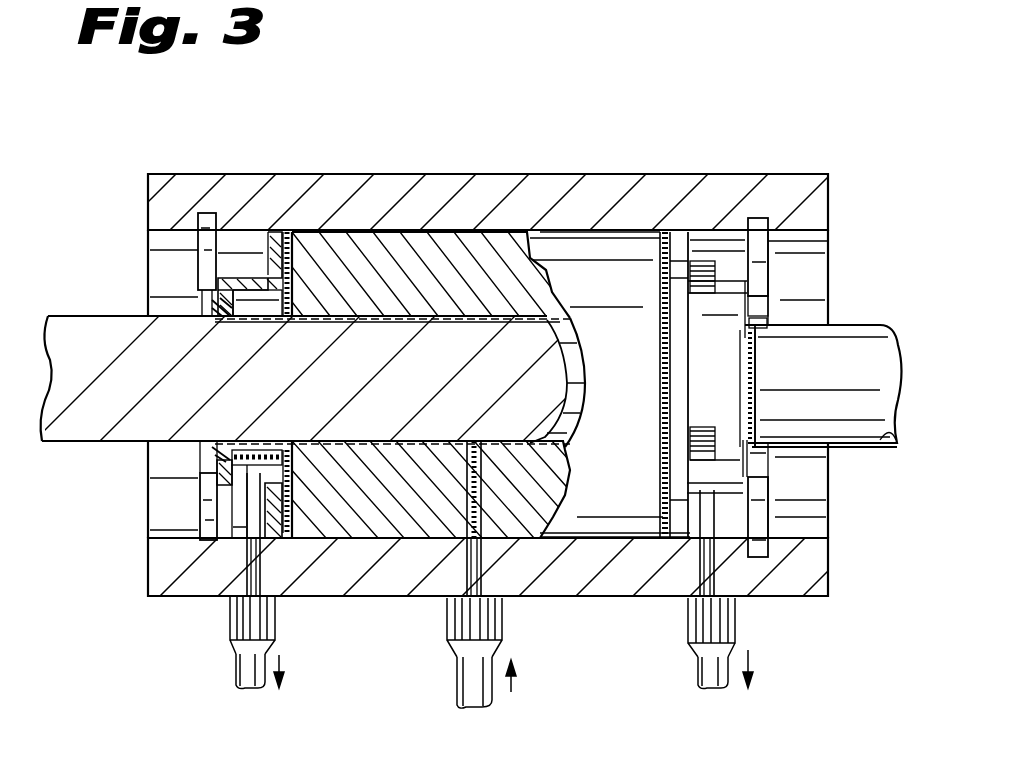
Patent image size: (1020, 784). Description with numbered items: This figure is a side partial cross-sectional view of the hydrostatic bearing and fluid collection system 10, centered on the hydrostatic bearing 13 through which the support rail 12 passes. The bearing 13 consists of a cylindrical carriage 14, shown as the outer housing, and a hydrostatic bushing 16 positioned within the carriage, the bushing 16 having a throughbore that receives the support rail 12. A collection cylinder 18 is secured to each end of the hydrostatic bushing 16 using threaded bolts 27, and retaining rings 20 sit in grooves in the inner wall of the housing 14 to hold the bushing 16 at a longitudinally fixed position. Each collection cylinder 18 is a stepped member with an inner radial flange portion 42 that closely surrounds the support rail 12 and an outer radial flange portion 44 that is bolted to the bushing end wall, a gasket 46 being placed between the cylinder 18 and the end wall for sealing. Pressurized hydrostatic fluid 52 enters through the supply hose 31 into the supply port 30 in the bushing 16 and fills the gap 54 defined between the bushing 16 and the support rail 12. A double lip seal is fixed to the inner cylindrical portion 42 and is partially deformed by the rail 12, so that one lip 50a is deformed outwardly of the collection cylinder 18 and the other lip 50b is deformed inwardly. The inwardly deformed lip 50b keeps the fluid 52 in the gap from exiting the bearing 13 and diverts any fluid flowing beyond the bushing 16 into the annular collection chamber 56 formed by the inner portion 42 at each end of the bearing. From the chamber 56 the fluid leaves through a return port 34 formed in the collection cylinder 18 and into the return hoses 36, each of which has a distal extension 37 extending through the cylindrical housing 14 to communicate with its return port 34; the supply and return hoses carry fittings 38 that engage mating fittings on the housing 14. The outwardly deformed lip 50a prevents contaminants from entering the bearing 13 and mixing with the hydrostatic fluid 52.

The hydrostatic bearing and fluid collection system 10 is at (748, 92).
The support rail 12 is at (860, 328).
The hydrostatic bearing 13 is at (480, 174).
The cylindrical carriage 14 is at (600, 174).
The hydrostatic bushing 16 is at (383, 262).
The collection cylinder 18 is at (236, 290).
The retaining ring 20 is at (205, 213).
The threaded bolt 27 is at (660, 285).
The supply port 30 is at (423, 538).
The supply hose 31 is at (462, 672).
The return port 34 is at (685, 497).
The return hose 36 is at (237, 670).
The distal extension 37 is at (707, 547).
The fitting 38 is at (230, 620).
The inner radial flange portion 42 is at (197, 278).
The outer radial flange portion 44 is at (276, 250).
The gasket 46 is at (290, 547).
The outwardly deformed lip 50a is at (227, 313).
The inwardly deformed lip 50b is at (227, 320).
The hydrostatic fluid 52 is at (477, 483).
The gap 54 is at (380, 327).
The annular collection chamber 56 is at (243, 450).